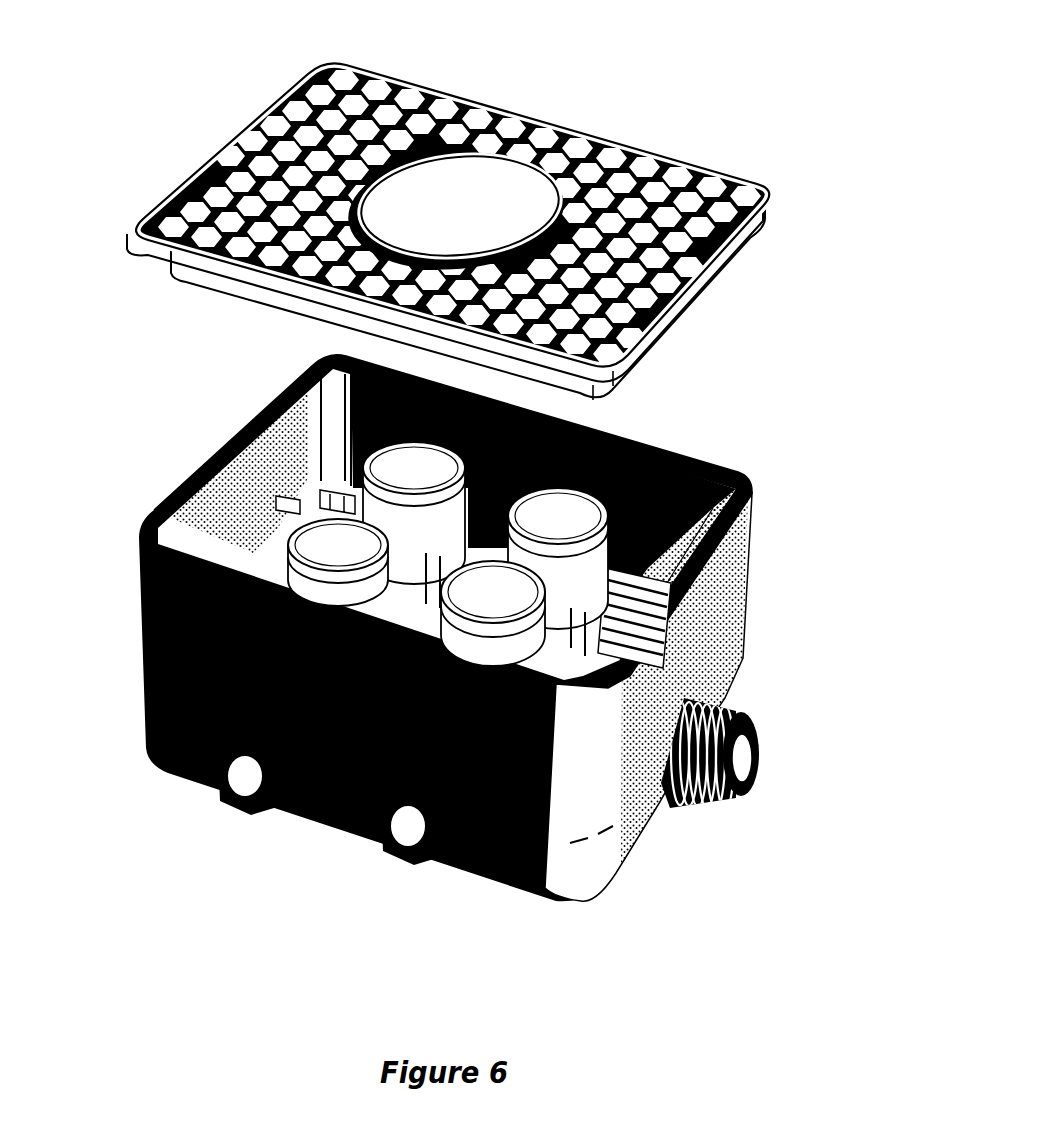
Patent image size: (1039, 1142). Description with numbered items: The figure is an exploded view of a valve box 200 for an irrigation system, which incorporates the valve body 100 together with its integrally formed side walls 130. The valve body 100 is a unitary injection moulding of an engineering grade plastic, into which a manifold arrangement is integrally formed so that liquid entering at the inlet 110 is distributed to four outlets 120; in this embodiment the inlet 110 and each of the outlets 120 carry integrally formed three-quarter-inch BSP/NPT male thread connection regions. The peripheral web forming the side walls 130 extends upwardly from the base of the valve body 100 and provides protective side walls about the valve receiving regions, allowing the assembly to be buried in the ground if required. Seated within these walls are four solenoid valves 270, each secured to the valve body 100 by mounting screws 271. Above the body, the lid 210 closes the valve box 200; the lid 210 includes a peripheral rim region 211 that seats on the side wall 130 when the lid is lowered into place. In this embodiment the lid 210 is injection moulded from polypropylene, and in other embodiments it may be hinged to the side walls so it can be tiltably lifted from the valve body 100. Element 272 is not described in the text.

The valve body 100 is at (455, 639).
The inlet 110 is at (756, 758).
The outlets 120 is at (238, 781).
The peripheral web 130 is at (136, 660).
The valve box 200 is at (419, 205).
The lid 210 is at (677, 133).
The peripheral rim region 211 is at (137, 244).
The solenoid valves 270 is at (578, 494).
The mounting screws 271 is at (640, 424).
The mounting terminals 272 is at (280, 496).